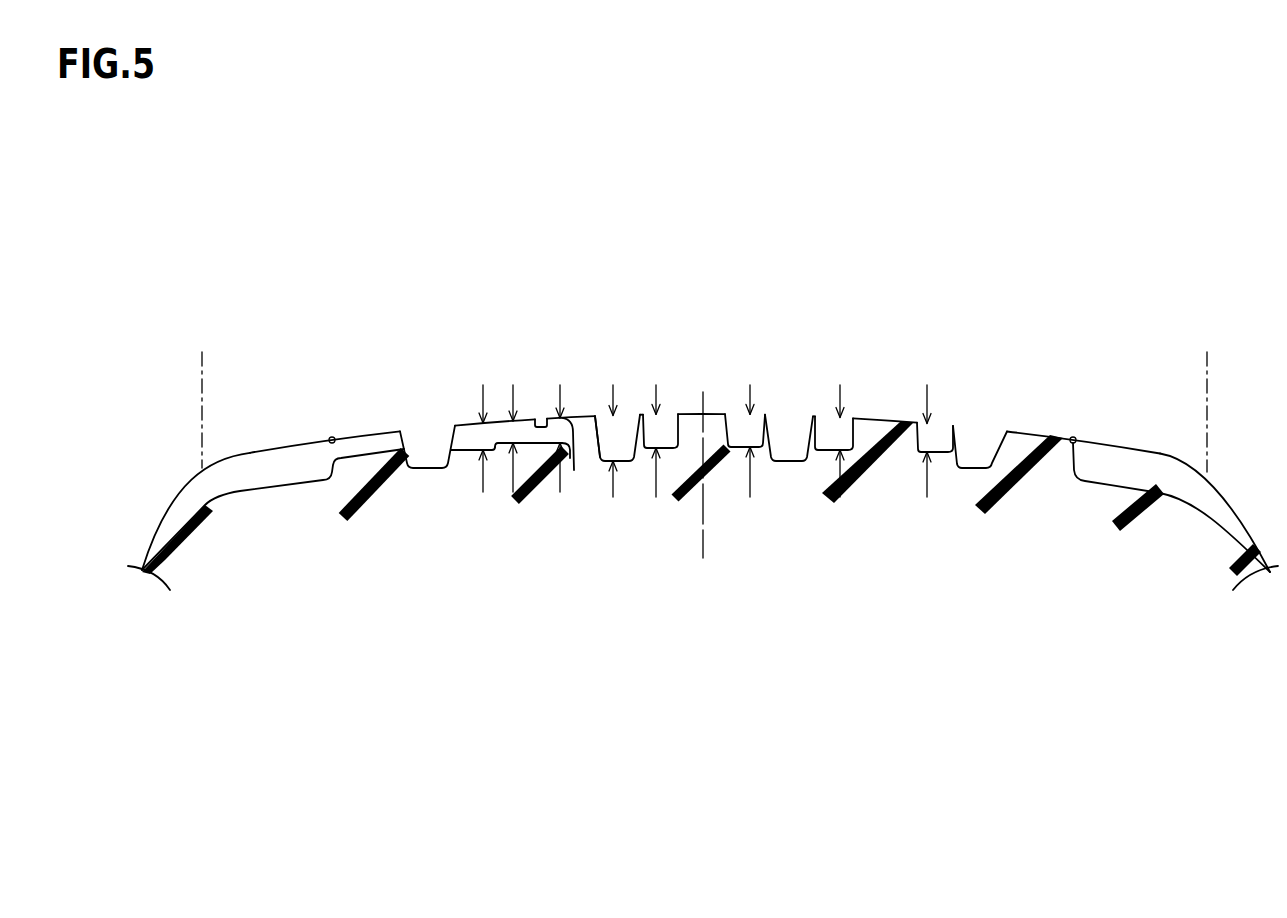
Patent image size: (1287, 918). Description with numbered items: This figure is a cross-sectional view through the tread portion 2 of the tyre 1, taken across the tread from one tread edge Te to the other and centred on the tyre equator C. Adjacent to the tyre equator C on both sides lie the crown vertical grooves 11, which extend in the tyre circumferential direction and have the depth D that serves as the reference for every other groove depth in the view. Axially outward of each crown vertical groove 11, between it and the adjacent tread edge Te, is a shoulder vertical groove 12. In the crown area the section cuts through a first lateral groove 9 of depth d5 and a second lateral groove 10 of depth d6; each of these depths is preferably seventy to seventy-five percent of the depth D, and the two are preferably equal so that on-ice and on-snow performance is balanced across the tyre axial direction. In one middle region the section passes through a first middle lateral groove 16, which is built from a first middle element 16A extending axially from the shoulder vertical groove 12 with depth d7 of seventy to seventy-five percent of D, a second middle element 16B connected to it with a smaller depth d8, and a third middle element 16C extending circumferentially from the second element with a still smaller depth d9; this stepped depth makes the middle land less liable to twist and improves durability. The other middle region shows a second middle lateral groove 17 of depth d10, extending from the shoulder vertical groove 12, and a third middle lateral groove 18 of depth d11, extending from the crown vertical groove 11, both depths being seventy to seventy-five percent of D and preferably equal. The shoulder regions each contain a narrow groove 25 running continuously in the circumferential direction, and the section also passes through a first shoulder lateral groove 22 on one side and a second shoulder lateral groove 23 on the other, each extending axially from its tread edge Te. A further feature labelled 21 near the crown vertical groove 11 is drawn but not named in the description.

The tyre 1 is at (1168, 306).
The tread portion 2 is at (1032, 337).
The first lateral grooves 9 is at (668, 424).
The second lateral grooves 10 is at (733, 426).
The crown vertical grooves 11 is at (631, 424).
The shoulder vertical grooves 12 is at (424, 447).
The first middle lateral grooves 16 is at (587, 292).
The first middle element 16A is at (464, 443).
The second middle element 16B is at (498, 422).
The third middle element 16C is at (540, 418).
The second middle lateral grooves 17 is at (823, 430).
The third middle lateral grooves 18 is at (950, 440).
The groove edge portion 21 is at (593, 416).
The first shoulder lateral grooves 22 is at (264, 467).
The second shoulder lateral grooves 23 is at (1133, 468).
The narrow groove 25 is at (332, 436).
The tread edges Te is at (705, 397).
The tyre equator C is at (703, 459).
The depth of crown vertical grooves D is at (598, 465).
The depth of first lateral grooves d5 is at (643, 457).
The depth of second lateral grooves d6 is at (763, 455).
The depth of first middle elements d7 is at (480, 455).
The depth of second middle elements d8 is at (509, 455).
The depth of third middle elements d9 is at (574, 470).
The depth of second middle lateral grooves d10 is at (825, 458).
The depth of third middle lateral grooves d11 is at (912, 455).